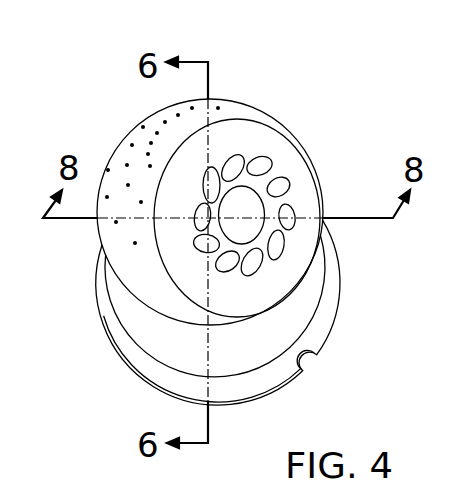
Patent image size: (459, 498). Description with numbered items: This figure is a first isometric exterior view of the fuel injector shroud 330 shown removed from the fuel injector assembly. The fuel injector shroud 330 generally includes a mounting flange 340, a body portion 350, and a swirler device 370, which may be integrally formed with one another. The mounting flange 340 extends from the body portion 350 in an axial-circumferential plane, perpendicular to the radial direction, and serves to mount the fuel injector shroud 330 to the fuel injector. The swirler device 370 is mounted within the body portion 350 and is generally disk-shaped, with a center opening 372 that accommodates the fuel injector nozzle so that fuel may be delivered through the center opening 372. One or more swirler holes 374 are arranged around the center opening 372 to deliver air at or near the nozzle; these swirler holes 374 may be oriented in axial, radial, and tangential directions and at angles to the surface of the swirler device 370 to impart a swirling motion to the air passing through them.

The fuel injector shroud 330 is at (220, 210).
The mounting flange 340 is at (114, 338).
The body portion 350 is at (318, 266).
The swirler device 370 is at (234, 197).
The center opening 372 is at (254, 210).
The swirler holes 374 is at (265, 166).